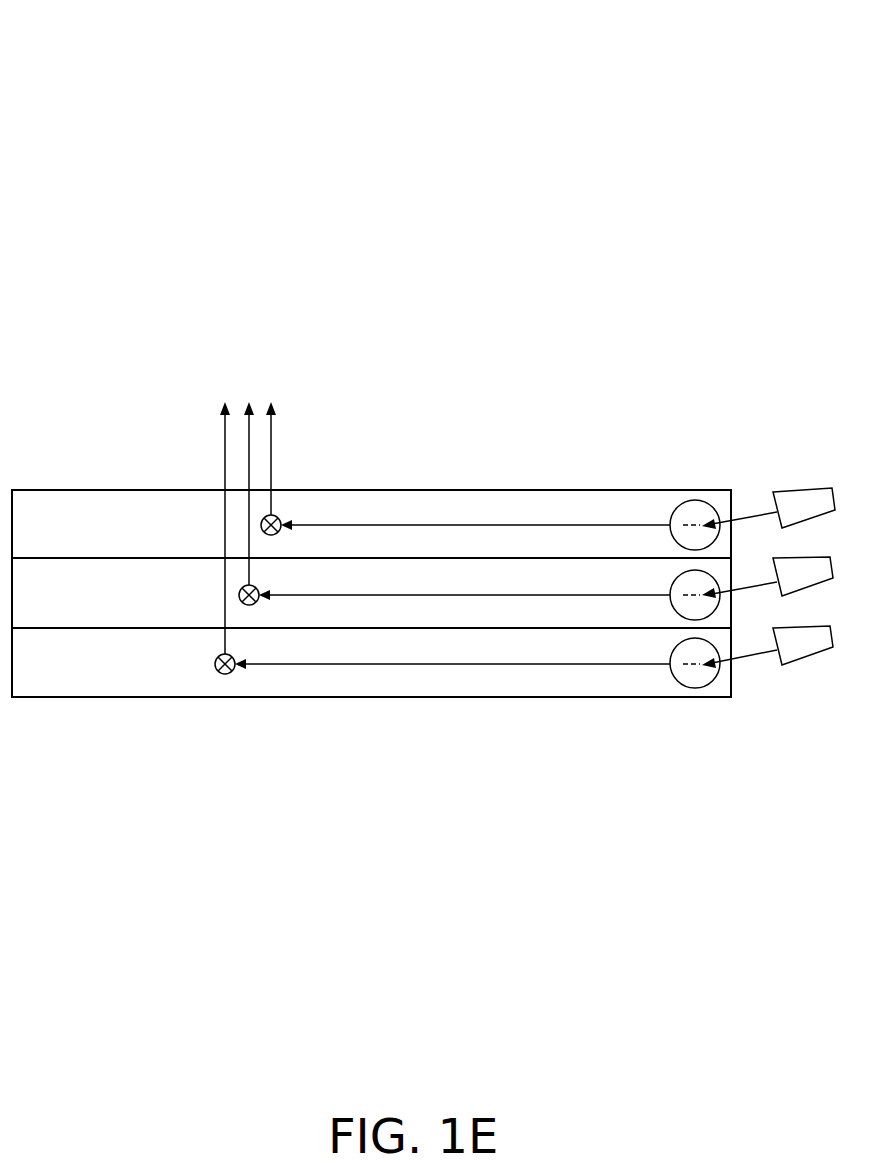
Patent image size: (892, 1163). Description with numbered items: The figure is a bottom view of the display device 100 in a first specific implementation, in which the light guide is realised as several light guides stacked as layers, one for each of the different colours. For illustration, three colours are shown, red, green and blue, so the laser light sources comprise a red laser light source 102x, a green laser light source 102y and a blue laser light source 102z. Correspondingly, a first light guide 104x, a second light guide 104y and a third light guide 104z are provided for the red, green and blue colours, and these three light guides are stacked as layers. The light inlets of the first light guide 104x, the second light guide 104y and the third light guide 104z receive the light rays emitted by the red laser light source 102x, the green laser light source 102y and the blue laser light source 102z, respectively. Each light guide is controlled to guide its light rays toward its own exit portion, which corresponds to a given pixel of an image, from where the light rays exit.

The display device 100 is at (122, 88).
The red laser light source 102x is at (772, 495).
The green laser light source 102y is at (780, 584).
The blue laser light source 102z is at (774, 659).
The first light guide 104x is at (371, 524).
The second light guide 104y is at (371, 593).
The third light guide 104z is at (371, 662).